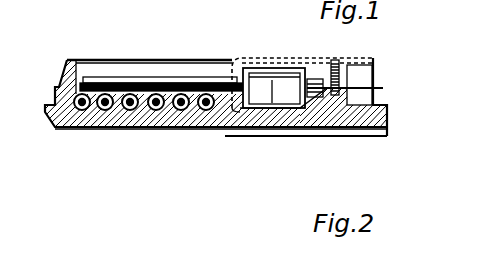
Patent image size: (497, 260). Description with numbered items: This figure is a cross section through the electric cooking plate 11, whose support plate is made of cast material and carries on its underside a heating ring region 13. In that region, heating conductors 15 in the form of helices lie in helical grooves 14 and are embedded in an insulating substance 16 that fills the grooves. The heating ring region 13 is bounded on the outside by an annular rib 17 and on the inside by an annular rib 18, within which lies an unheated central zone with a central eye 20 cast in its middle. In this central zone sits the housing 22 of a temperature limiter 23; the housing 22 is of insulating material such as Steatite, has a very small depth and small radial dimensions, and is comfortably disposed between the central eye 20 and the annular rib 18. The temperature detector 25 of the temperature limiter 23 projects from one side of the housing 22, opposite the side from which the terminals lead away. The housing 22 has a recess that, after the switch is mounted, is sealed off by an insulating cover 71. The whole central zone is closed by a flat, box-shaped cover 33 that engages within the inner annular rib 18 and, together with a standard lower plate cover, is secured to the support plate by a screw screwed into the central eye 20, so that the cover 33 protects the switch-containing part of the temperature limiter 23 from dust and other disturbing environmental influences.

The electric cooking plate 11 is at (122, 140).
The heating ring region 13 is at (122, 64).
The helical grooves 14 is at (138, 132).
The heating conductors 15 is at (78, 132).
The insulating substance 16 is at (185, 132).
The annular rib 17 is at (68, 58).
The annular rib 18 is at (221, 88).
The central eye 20 is at (340, 133).
The housing 22 is at (262, 133).
The temperature limiter 23 is at (243, 131).
The temperature detector 25 is at (172, 78).
The cover 33 is at (270, 60).
The insulating cover 71 is at (292, 136).